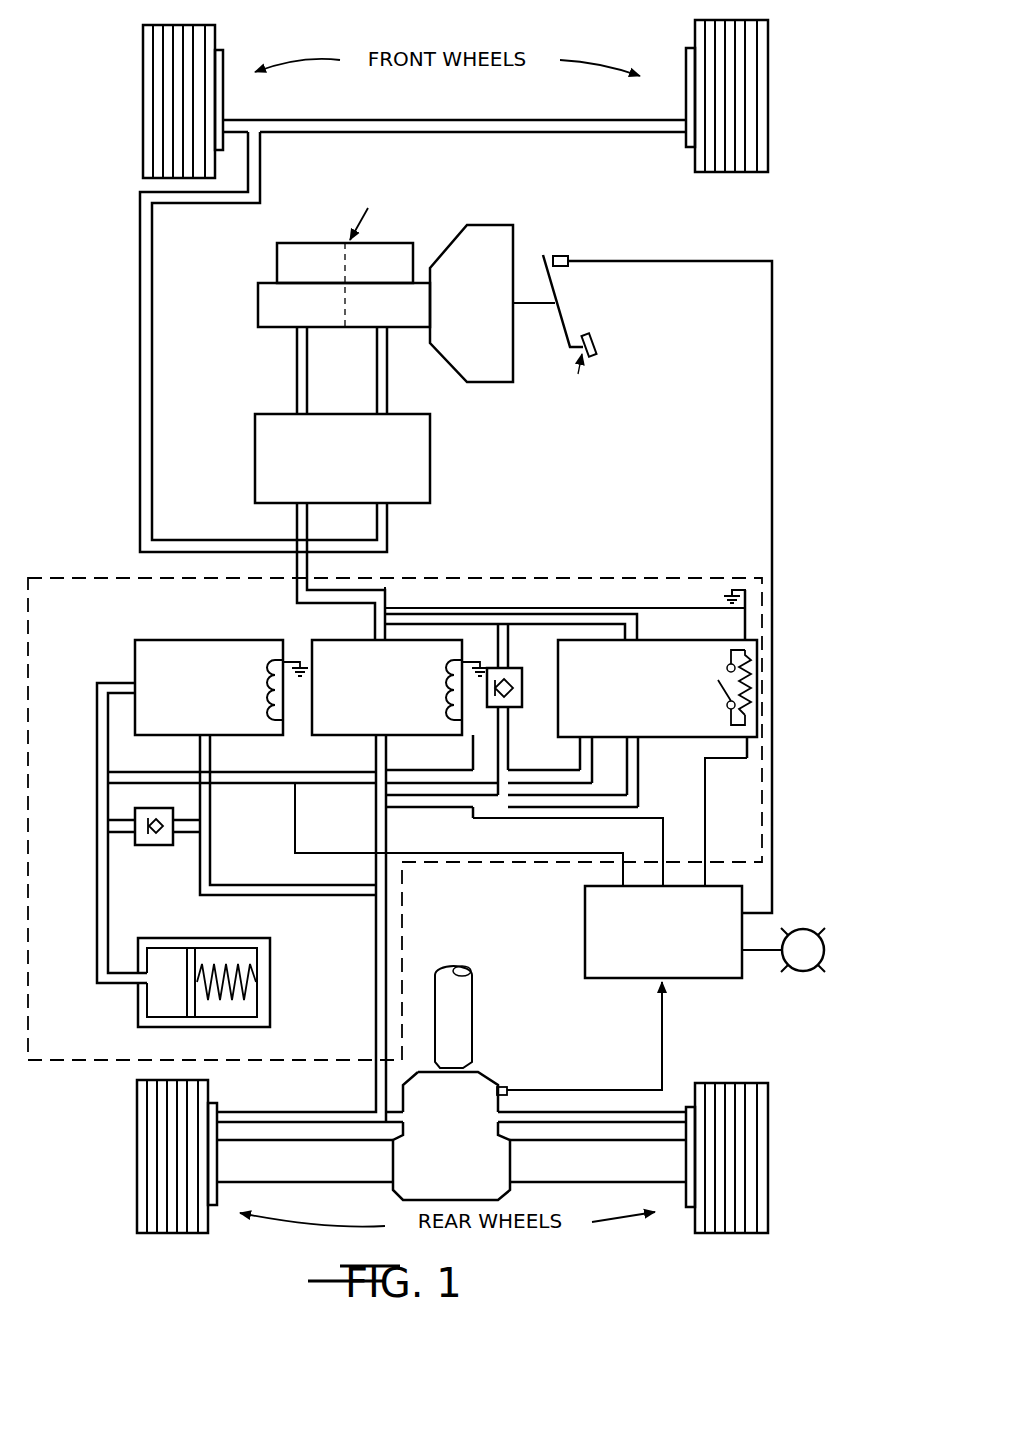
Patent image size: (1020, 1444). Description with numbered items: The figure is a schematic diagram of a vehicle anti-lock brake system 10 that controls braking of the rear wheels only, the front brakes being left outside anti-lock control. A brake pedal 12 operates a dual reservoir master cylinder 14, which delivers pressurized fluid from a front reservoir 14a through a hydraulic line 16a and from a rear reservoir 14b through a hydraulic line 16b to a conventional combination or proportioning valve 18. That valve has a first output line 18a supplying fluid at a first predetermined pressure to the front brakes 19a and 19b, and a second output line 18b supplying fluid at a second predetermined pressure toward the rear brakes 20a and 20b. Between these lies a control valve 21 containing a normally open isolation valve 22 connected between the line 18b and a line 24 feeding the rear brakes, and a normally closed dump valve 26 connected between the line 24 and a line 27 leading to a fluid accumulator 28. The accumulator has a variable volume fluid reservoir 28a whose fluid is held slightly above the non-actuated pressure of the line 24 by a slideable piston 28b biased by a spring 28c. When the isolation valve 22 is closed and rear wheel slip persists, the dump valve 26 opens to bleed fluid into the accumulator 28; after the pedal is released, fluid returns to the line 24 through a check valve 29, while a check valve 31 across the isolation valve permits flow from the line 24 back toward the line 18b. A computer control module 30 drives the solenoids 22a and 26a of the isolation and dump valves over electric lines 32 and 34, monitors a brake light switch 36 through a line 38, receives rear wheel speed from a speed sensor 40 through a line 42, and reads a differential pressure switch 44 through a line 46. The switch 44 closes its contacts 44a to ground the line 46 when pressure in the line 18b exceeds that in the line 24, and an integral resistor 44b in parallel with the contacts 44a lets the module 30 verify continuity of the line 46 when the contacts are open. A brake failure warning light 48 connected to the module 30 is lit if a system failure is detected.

The anti-lock brake system 10 is at (98, 1075).
The brake pedal 12 is at (600, 342).
The dual reservoir master cylinder 14 is at (370, 281).
The front reservoir 14a is at (428, 228).
The rear reservoir 14b is at (277, 258).
The hydraulic line 16a is at (390, 378).
The hydraulic line 16b is at (297, 385).
The combination or proportioning valve 18 is at (435, 455).
The first output line 18a is at (140, 455).
The second output line 18b is at (380, 590).
The front brake 19a is at (225, 93).
The front brake 19b is at (683, 92).
The rear brake 20a is at (217, 1195).
The rear brake 20b is at (690, 1205).
The control valve 21 is at (548, 568).
The isolation valve 22 is at (366, 679).
The solenoid 22a is at (445, 720).
The line 24 is at (392, 938).
The dump valve 26 is at (196, 680).
The solenoid 26a is at (270, 722).
The line 27 is at (97, 935).
The fluid accumulator 28 is at (189, 980).
The variable volume fluid reservoir 28a is at (158, 995).
The slideable piston 28b is at (205, 960).
The spring 28c is at (250, 972).
The check valve 29 is at (160, 846).
The computer control module 30 is at (585, 932).
The check valve 31 is at (522, 688).
The electric line 32 is at (668, 825).
The electric line 34 is at (295, 825).
The brake light switch 36 is at (560, 254).
The line 38 is at (768, 580).
The speed sensor 40 is at (507, 1090).
The line 42 is at (703, 1002).
The differential pressure switch 44 is at (699, 672).
The switch contacts 44a is at (722, 652).
The resistor 44b is at (745, 700).
The line 46 is at (705, 835).
The brake failure warning light 48 is at (806, 925).